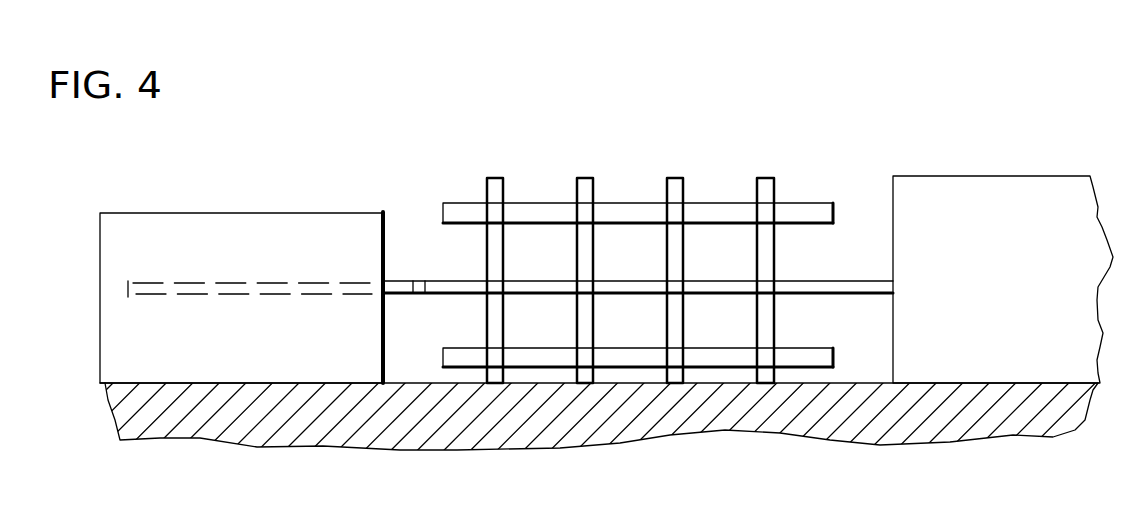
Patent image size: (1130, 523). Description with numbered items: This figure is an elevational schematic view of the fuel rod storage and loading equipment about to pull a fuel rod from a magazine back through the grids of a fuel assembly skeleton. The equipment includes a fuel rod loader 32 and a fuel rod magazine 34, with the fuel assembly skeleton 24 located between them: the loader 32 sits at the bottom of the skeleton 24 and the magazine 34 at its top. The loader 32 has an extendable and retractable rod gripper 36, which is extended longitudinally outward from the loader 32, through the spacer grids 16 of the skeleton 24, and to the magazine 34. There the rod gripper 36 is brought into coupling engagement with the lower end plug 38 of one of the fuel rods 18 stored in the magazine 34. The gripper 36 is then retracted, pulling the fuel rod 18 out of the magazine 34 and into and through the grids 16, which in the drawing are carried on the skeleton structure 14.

The frame rail 14 is at (707, 210).
The spacer grids 16 is at (765, 312).
The fuel rod 18 is at (395, 285).
The fuel assembly skeleton 24 is at (725, 357).
The fuel rod loader 32 is at (920, 190).
The fuel rod magazine 34 is at (255, 223).
The rod gripper 36 is at (467, 286).
The lower end plug 38 is at (420, 293).